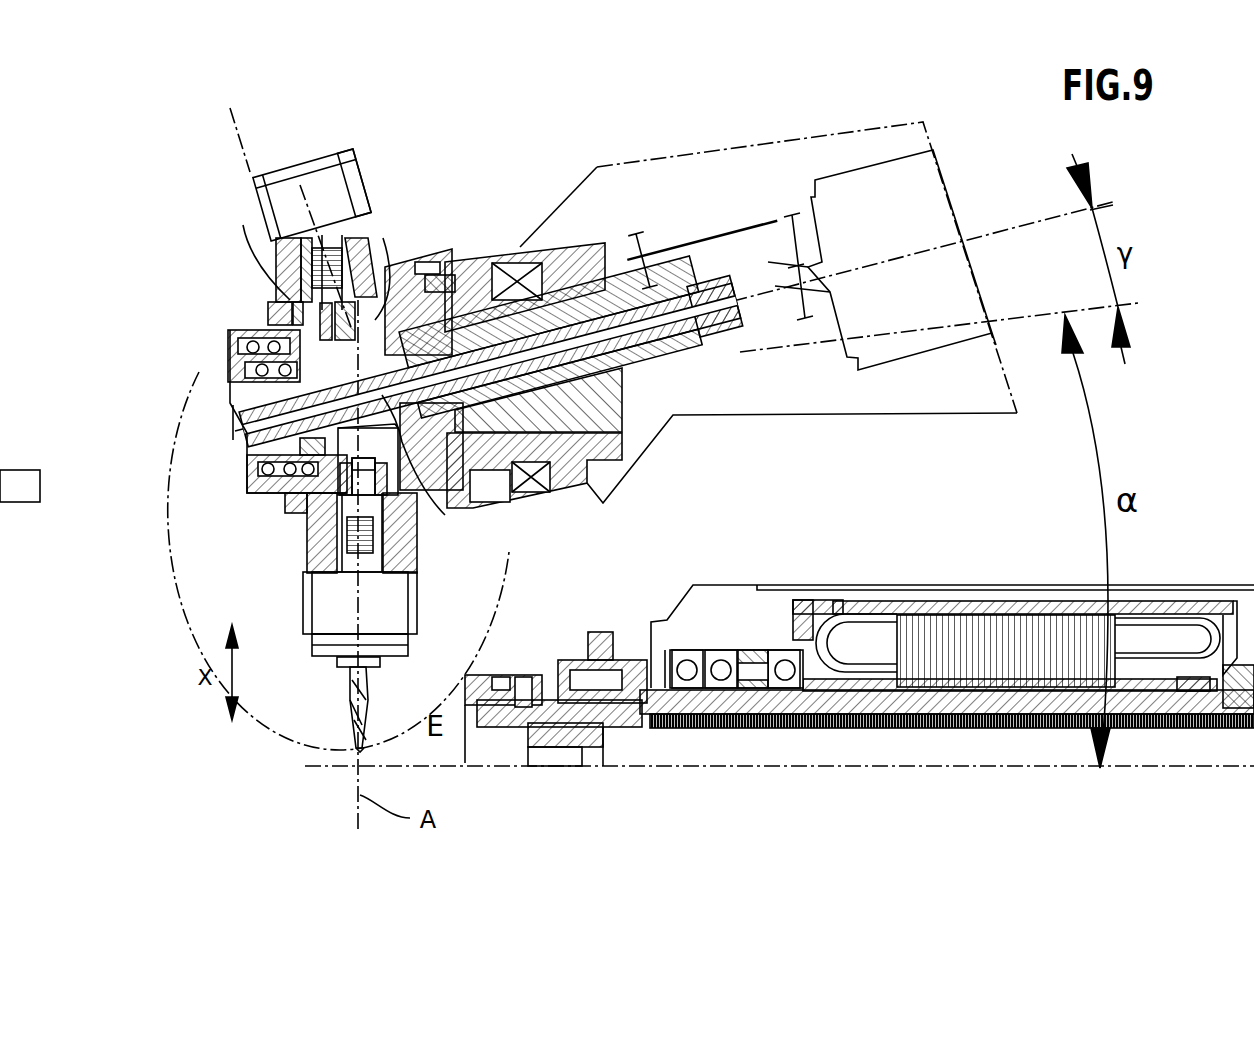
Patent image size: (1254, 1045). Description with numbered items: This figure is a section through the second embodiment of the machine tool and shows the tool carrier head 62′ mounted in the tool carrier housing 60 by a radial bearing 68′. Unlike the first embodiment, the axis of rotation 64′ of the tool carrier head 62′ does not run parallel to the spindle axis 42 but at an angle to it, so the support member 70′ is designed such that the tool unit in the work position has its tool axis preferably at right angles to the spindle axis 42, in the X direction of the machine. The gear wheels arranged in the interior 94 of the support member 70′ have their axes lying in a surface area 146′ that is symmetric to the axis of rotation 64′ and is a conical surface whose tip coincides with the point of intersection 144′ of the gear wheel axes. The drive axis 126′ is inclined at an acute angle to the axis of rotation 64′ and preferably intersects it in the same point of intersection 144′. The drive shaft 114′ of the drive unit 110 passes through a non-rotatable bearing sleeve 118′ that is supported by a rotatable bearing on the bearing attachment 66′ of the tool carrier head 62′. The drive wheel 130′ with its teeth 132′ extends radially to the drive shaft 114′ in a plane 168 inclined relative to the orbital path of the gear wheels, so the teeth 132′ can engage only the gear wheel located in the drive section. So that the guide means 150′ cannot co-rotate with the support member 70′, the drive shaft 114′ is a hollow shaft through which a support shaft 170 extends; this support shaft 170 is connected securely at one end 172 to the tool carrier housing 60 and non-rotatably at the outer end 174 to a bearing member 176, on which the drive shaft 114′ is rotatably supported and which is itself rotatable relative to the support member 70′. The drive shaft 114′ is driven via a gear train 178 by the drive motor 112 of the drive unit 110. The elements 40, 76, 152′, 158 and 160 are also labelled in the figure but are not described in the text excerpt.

The machine bed 40 is at (524, 662).
The spindle axis 42 is at (795, 768).
The tool carrier housing 60 is at (858, 382).
The tool carrier head 62′ is at (238, 268).
The axis of rotation 64′ is at (952, 325).
The bearing attachment 66′ is at (565, 505).
The radial bearing 68′ is at (510, 247).
The support member 70′ is at (400, 548).
The tool 76 is at (352, 692).
The interior of the support member 94 is at (405, 535).
The drive unit 110 is at (822, 170).
The drive motor 112 is at (932, 178).
The drive shaft 114′ is at (623, 305).
The bearing sleeve 118′ is at (605, 405).
The drive axis 126′ is at (680, 290).
The drive wheel 130′ is at (232, 376).
The teeth 132′ is at (268, 310).
The point of intersection 144′ is at (475, 483).
The conical surface area 146′ is at (445, 263).
The guide means 150′ is at (270, 490).
The drive shaft 152′ is at (275, 270).
The ring 158 is at (295, 514).
The bearing carrier 160 is at (298, 498).
The plane 168 is at (240, 147).
The support shaft 170 is at (680, 350).
The end of the support shaft 172 is at (773, 320).
The outer end of the support shaft 174 is at (233, 416).
The bearing member 176 is at (236, 352).
The gear train 178 is at (753, 215).